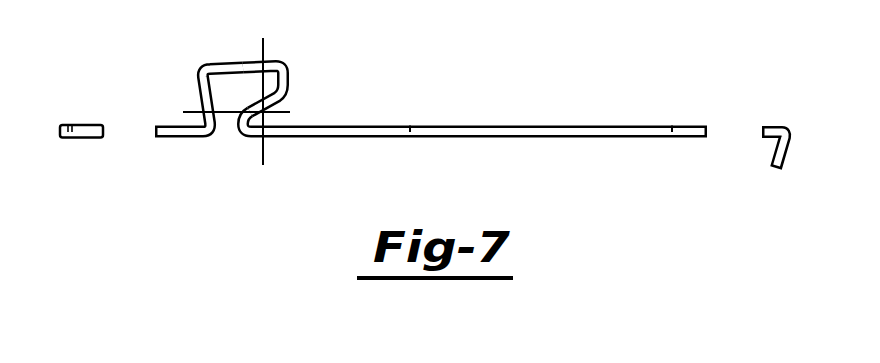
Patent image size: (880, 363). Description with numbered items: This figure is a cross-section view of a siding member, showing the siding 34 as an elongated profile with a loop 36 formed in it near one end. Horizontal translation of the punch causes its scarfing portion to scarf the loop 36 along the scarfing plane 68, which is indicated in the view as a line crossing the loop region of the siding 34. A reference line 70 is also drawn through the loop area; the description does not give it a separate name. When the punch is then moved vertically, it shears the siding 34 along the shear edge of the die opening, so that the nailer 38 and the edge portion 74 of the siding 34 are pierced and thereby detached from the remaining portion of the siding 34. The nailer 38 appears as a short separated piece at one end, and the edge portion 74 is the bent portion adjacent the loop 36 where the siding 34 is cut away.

The siding 34 is at (590, 133).
The loop 36 is at (278, 64).
The nailer 38 is at (85, 138).
The scarfing plane 68 is at (190, 112).
The center line 70 is at (266, 153).
The edge portion 74 is at (237, 130).